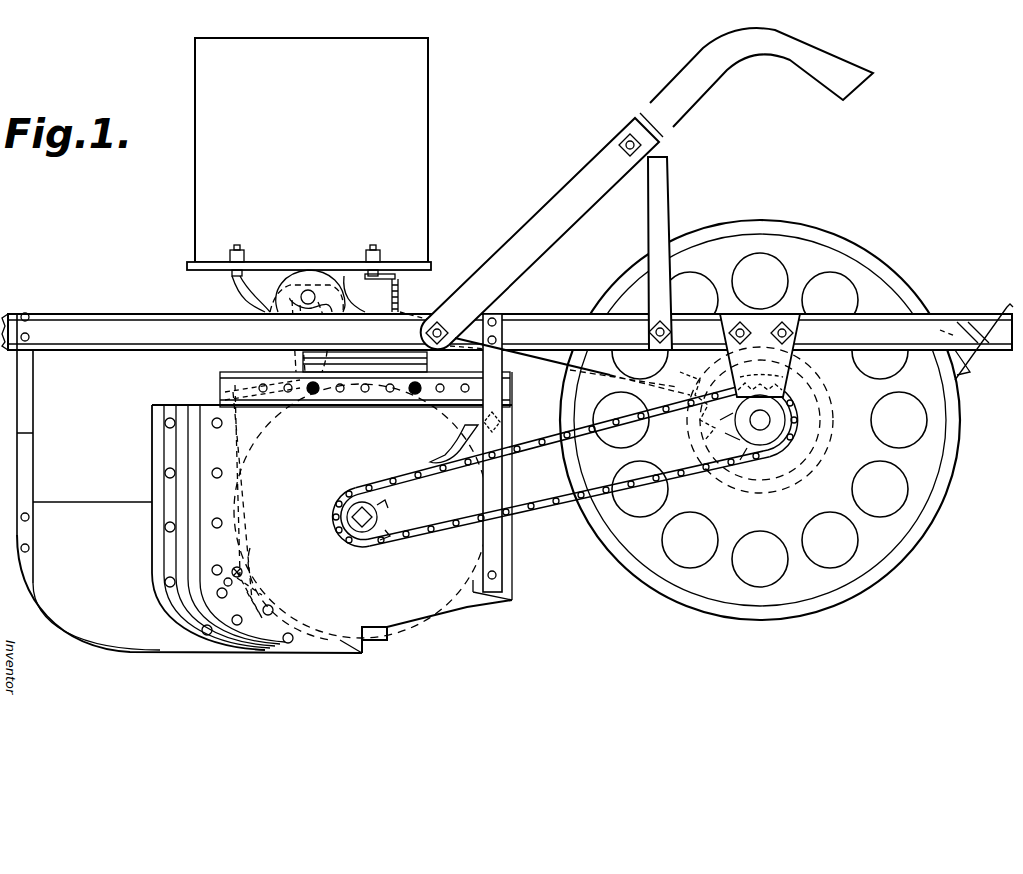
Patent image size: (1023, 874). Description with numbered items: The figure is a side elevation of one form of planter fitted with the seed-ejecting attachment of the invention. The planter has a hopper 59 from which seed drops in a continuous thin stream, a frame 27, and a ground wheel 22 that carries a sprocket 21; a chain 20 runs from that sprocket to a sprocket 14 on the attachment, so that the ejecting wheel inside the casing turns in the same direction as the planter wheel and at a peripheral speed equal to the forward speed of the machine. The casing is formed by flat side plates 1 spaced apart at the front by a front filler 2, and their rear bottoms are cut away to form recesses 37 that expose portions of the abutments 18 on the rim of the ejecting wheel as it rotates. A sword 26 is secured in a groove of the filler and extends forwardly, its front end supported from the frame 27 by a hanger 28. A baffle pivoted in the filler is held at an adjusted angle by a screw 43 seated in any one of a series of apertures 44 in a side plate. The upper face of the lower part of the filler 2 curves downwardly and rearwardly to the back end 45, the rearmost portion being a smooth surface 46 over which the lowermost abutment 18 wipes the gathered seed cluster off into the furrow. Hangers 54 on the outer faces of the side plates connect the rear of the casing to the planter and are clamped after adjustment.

The side plates 1 is at (355, 620).
The front filler 2 is at (193, 410).
The sprocket 14 is at (387, 507).
The abutments 18 is at (430, 640).
The chain 20 is at (553, 507).
The sprocket 21 is at (745, 470).
The wheel 22 is at (897, 558).
The sword 26 is at (132, 623).
The frame 27 is at (110, 318).
The hanger 28 is at (25, 415).
The recesses 37 is at (477, 607).
The screw 43 is at (240, 570).
The apertures 44 is at (220, 593).
The back end 45 is at (363, 653).
The smooth surface 46 is at (247, 592).
The hangers 54 is at (508, 340).
The hopper 59 is at (378, 158).